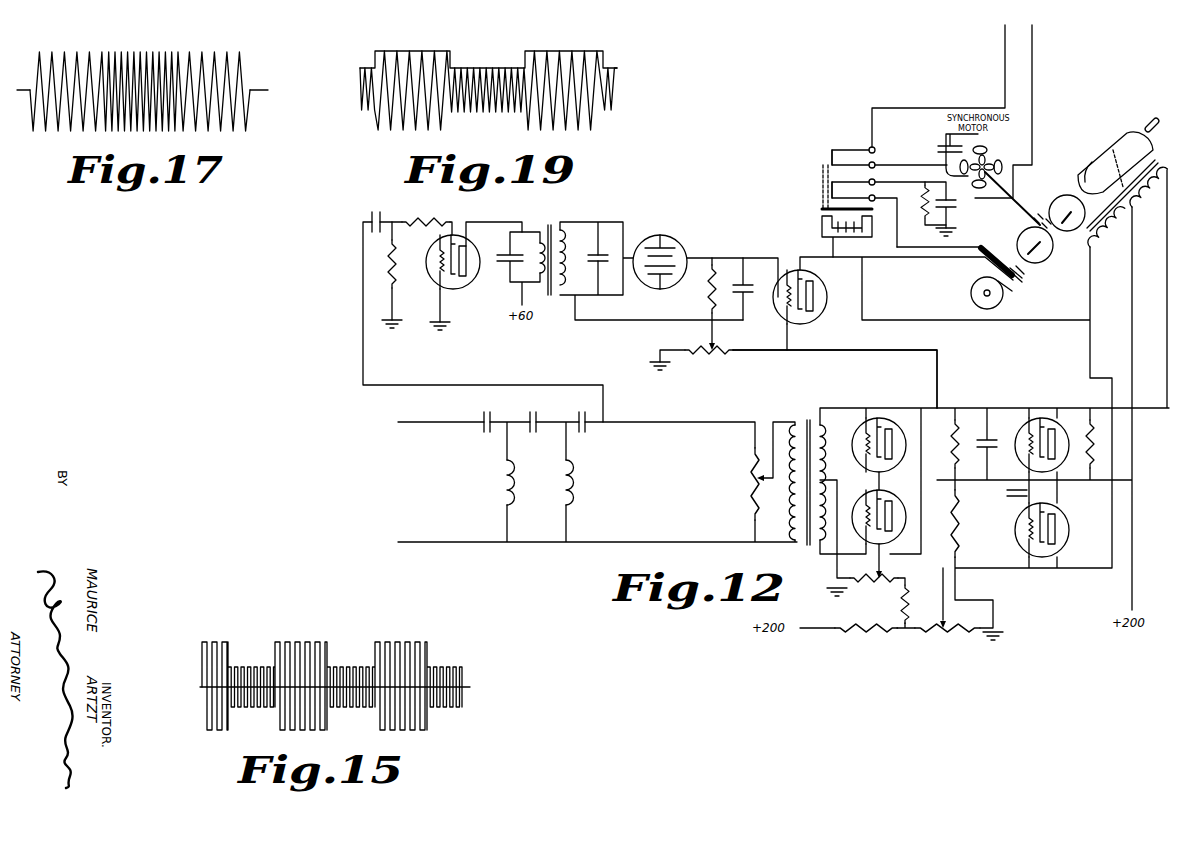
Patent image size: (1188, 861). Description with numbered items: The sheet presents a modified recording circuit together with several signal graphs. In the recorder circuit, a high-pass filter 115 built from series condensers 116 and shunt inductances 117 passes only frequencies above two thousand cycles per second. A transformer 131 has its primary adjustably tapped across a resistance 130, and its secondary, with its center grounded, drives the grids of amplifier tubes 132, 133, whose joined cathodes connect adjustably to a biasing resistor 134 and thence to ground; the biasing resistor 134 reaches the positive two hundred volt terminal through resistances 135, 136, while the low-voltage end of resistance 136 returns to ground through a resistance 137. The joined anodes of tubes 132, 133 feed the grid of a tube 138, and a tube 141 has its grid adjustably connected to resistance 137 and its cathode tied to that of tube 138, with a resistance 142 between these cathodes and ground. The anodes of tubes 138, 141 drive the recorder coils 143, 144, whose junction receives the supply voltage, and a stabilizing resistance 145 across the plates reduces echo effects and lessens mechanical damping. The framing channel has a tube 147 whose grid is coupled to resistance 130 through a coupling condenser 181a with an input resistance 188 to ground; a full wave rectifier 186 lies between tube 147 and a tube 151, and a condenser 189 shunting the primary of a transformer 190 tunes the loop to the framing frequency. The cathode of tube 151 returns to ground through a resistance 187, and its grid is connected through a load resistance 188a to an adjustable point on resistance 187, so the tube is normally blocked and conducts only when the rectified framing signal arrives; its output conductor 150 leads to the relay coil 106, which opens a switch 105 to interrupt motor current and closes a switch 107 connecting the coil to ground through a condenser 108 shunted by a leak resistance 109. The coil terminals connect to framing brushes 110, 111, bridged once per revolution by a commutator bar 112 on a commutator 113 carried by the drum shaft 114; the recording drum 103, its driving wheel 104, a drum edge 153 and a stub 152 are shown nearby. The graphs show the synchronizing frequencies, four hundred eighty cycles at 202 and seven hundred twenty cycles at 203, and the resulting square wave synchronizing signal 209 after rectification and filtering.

In FIG. 12, the drum 103 is at (1130, 147).
In FIG. 12, the wheel 104 is at (1053, 210).
In FIG. 12, the switch 105 is at (826, 157).
In FIG. 12, the relay coil 106 is at (820, 224).
In FIG. 12, the switch 107 is at (826, 192).
In FIG. 12, the condenser 108 is at (950, 208).
In FIG. 12, the leak resistance 109 is at (923, 220).
In FIG. 12, the framing brush 110 is at (978, 270).
In FIG. 12, the framing brush 111 is at (996, 250).
In FIG. 12, the commutator bar 112 is at (1022, 277).
In FIG. 12, the commutator 113 is at (1004, 296).
In FIG. 12, the drum shaft 114 is at (1077, 242).
In FIG. 12, the high-pass filter 115 is at (550, 490).
In FIG. 12, the series condensers 116 is at (583, 410).
In FIG. 12, the shunt inductances 117 is at (502, 488).
In FIG. 12, the resistance 130 is at (754, 480).
In FIG. 12, the transformer 131 is at (806, 411).
In FIG. 12, the amplifier tube 132 is at (879, 417).
In FIG. 12, the amplifier tube 133 is at (900, 499).
In FIG. 12, the biasing resistor 134 is at (878, 586).
In FIG. 12, the resistance 135 is at (910, 595).
In FIG. 12, the resistance 136 is at (885, 635).
In FIG. 12, the resistance 137 is at (960, 635).
In FIG. 12, the tube 138 is at (1041, 417).
In FIG. 12, the tube 141 is at (1047, 558).
In FIG. 12, the resistance 142 is at (962, 530).
In FIG. 12, the recorder coil 143 is at (1111, 242).
In FIG. 12, the recorder coil 144 is at (1151, 212).
In FIG. 12, the stabilizing resistance 145 is at (1091, 417).
In FIG. 12, the tube 147 is at (453, 237).
In FIG. 12, the conductor 150 is at (876, 342).
In FIG. 12, the tube 151 is at (791, 270).
In FIG. 12, the stub 152 is at (1156, 161).
In FIG. 12, the drum edge 153 is at (1082, 178).
In FIG. 12, the capacitor 181a is at (370, 219).
In FIG. 12, the full wave rectifier 186 is at (657, 236).
In FIG. 12, the resistance 187 is at (716, 354).
In FIG. 12, the input resistance 188 is at (395, 286).
In FIG. 12, the load resistance 188a is at (704, 291).
In FIG. 12, the condenser 189 is at (504, 272).
In FIG. 12, the transformer 190 is at (552, 228).
In FIG. 17, the 480 cycle frequency 202 is at (58, 58).
In FIG. 19, the 480 cycle frequency 202 is at (562, 60).
In FIG. 17, the 720 cycle frequency 203 is at (147, 52).
In FIG. 19, the 720 cycle frequency 203 is at (491, 68).
In FIG. 19, the square wave synchronizing signal graph 209 is at (400, 54).